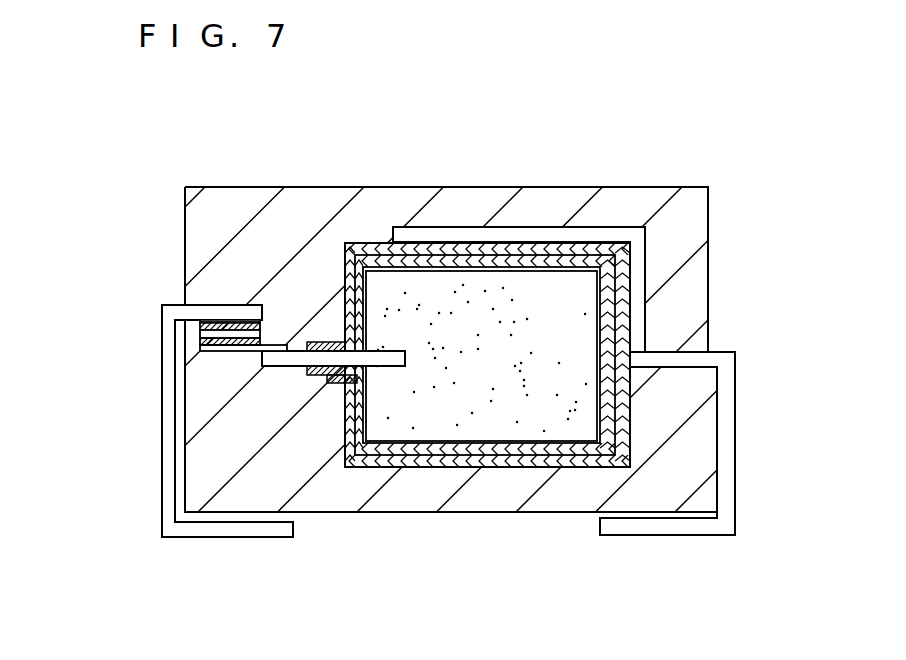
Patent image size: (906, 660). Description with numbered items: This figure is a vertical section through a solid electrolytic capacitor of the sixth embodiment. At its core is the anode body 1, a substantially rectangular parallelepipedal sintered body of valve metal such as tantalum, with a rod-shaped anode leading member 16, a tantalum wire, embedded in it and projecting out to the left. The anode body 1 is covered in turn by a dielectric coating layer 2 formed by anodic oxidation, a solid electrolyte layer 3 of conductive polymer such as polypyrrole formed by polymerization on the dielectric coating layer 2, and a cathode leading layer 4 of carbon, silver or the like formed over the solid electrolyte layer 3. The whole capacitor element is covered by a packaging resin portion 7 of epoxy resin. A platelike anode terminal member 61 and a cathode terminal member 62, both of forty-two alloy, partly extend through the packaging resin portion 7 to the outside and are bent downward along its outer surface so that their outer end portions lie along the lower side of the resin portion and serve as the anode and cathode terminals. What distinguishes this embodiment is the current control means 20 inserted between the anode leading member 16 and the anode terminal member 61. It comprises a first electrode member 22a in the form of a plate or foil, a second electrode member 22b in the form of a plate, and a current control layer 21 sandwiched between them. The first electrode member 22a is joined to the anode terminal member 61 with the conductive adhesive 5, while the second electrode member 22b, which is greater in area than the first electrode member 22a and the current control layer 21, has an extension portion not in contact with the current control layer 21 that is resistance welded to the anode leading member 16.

The anode body 1 is at (400, 430).
The dielectric coating layer 2 is at (427, 448).
The solid electrolyte layer 3 is at (473, 453).
The cathode leading layer 4 is at (518, 465).
The conductive adhesive 5 is at (228, 320).
The packaging resin portion 7 is at (612, 203).
The anode leading member 16 is at (298, 352).
The current control means 20 is at (153, 369).
The current control layer 21 is at (200, 334).
The first electrode member 22a is at (200, 324).
The second electrode member 22b is at (200, 343).
The anode terminal member 61 is at (163, 478).
The cathode terminal member 62 is at (735, 458).